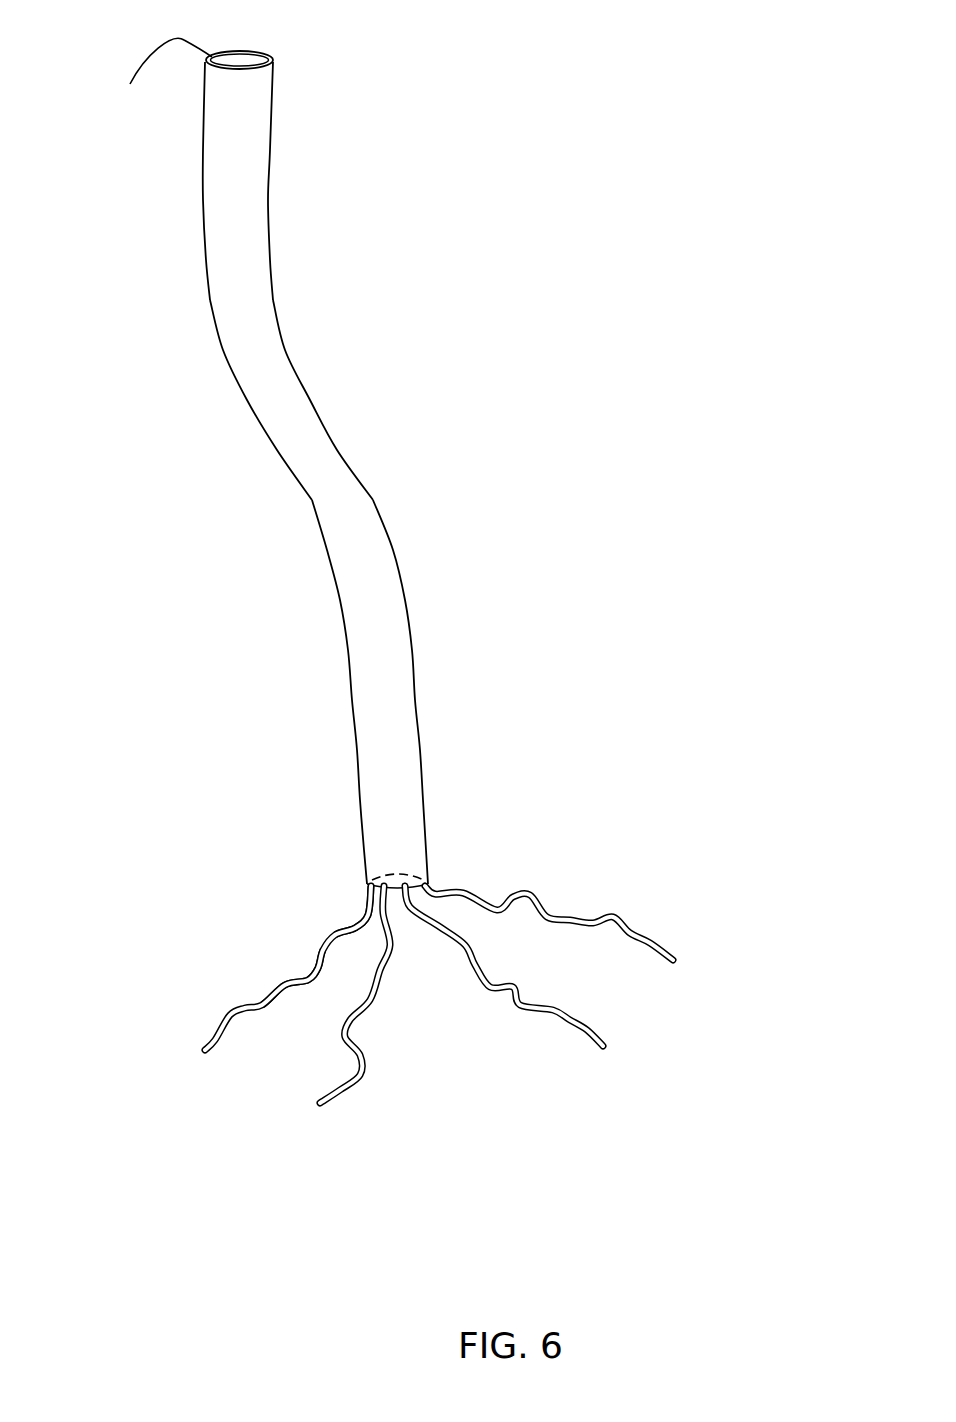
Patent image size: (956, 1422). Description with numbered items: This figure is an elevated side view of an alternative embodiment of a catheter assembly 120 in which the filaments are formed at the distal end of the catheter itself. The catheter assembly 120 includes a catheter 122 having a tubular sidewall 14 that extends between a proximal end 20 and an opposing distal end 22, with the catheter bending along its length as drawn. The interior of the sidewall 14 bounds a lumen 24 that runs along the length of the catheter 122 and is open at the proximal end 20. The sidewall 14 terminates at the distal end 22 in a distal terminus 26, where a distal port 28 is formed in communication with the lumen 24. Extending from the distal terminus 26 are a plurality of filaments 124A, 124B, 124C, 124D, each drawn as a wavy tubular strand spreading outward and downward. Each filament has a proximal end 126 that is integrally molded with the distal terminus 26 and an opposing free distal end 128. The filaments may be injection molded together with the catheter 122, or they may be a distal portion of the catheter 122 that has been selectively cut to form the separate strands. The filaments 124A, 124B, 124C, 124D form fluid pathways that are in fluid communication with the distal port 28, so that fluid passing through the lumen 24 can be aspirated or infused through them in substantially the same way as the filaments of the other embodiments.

The tubular sidewall 14 is at (164, 78).
The proximal end 20 is at (349, 446).
The distal end 22 is at (462, 768).
The lumen 24 is at (243, 58).
The distal terminus 26 is at (441, 872).
The distal port 28 is at (351, 877).
The catheter assembly 120 is at (436, 553).
The catheter 122 is at (344, 401).
The filament 124A is at (207, 1028).
The filament 124B is at (366, 1030).
The filament 124C is at (612, 1029).
The filament 124D is at (662, 933).
The proximal end of filament 126 is at (358, 893).
The distal end of filament 128 is at (274, 985).